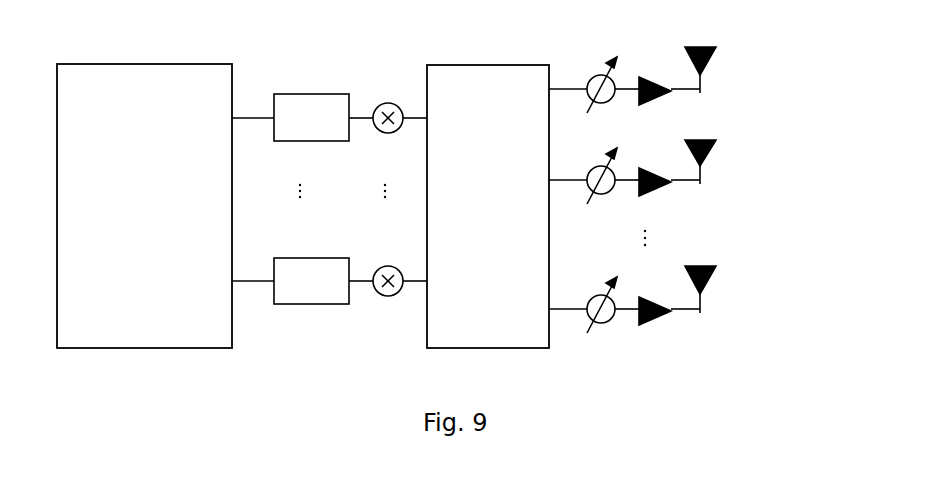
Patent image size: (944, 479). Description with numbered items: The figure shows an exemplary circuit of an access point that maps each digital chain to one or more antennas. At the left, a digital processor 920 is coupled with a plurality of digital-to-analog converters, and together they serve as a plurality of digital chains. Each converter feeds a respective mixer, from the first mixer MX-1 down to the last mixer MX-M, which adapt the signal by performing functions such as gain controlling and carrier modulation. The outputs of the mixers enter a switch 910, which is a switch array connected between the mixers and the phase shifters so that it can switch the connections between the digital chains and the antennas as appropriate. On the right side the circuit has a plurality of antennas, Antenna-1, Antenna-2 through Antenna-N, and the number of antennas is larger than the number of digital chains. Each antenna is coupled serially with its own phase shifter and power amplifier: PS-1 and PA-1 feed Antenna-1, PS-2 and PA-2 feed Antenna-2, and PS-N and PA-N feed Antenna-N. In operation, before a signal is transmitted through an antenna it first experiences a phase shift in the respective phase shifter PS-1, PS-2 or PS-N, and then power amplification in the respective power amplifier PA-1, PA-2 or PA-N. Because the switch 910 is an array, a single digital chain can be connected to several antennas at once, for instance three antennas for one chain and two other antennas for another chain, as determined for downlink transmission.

The switch 910 is at (488, 206).
The digital processor 920 is at (144, 206).
The mixer MX-1 is at (393, 103).
The mixer MX-M is at (395, 269).
The phase shifter PS-1 is at (600, 97).
The phase shifter PS-2 is at (600, 194).
The phase shifter PS-N is at (600, 324).
The power amplifier PA-1 is at (653, 78).
The power amplifier PA-2 is at (653, 172).
The power amplifier PA-N is at (655, 300).
The antenna Antenna-1 is at (761, 70).
The antenna Antenna-2 is at (761, 162).
The antenna Antenna-N is at (762, 289).